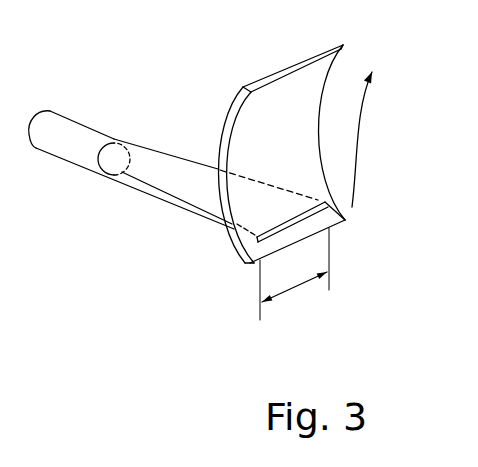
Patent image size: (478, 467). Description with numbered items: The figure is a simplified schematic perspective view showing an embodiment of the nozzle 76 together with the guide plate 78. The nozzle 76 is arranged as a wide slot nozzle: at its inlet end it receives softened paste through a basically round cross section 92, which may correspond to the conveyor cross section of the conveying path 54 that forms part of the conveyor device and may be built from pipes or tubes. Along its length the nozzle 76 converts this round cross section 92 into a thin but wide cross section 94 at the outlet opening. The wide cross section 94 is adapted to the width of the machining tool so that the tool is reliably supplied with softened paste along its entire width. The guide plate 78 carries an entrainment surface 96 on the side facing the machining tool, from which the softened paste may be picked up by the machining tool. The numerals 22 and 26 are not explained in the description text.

The implement 22 is at (362, 138).
The width 26 is at (294, 287).
The conveying path 54 is at (68, 138).
The nozzle 76 is at (153, 133).
The guide plate 78 is at (205, 135).
The round cross section 92 is at (122, 178).
The wide cross section 94 is at (330, 229).
The entrainment surface 96 is at (327, 145).